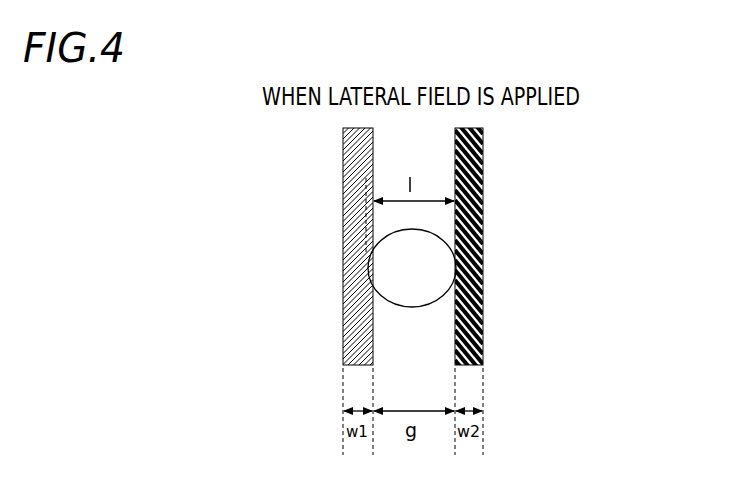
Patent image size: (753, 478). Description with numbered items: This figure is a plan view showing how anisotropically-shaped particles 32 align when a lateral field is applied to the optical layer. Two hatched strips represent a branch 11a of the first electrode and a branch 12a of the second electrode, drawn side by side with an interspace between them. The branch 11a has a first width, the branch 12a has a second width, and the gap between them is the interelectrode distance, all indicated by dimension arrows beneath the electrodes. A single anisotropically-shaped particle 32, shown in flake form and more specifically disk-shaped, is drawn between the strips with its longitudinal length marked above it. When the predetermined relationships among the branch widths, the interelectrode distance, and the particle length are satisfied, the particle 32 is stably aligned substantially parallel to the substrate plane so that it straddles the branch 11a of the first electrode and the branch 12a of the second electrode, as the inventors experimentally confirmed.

The branch of the first electrode 11a is at (350, 304).
The branch of the second electrode 12a is at (483, 193).
The anisotropically-shaped particle 32 is at (435, 278).